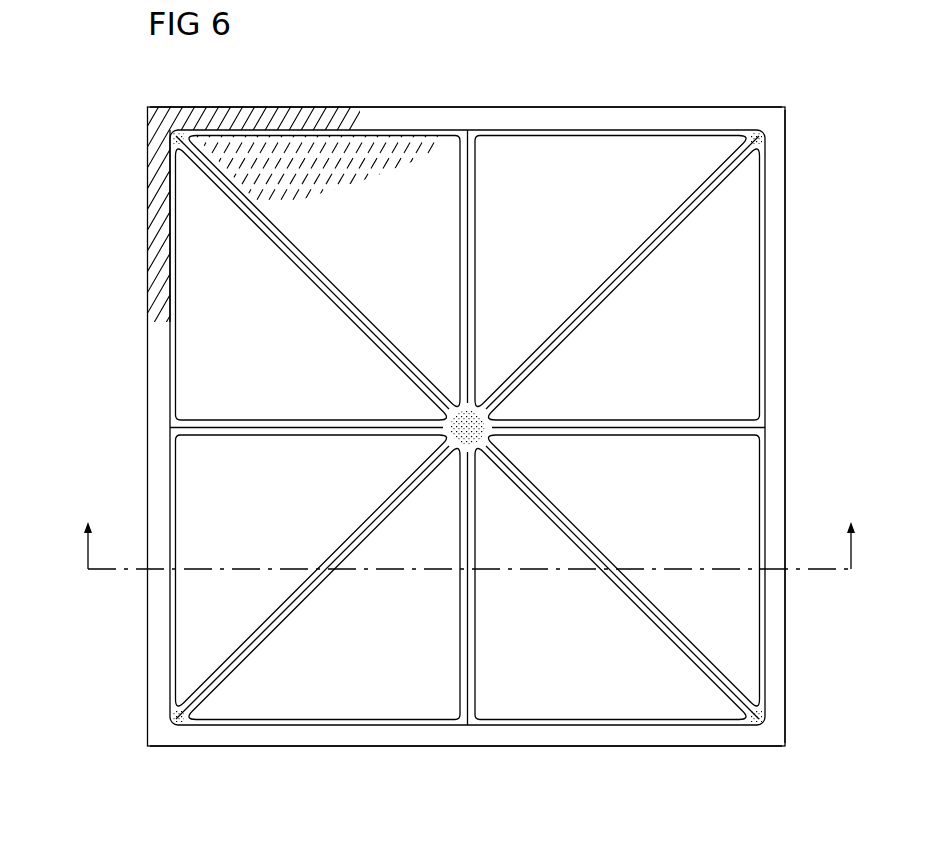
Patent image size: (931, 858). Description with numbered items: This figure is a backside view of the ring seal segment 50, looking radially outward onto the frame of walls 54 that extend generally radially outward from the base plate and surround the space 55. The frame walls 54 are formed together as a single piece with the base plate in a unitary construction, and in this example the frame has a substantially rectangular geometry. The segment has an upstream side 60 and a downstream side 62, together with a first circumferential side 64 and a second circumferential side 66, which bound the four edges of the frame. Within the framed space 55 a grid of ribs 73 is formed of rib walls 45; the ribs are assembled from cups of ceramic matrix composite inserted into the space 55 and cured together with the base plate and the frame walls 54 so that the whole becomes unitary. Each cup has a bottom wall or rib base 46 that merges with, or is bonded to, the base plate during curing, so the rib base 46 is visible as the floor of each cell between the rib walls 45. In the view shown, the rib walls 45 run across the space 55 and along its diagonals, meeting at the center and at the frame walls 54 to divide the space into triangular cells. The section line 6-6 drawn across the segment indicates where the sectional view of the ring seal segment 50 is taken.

The ring seal segment 50 is at (106, 159).
The frame walls 54 is at (160, 378).
The space 55 is at (200, 270).
The upstream side 60 is at (160, 336).
The downstream side 62 is at (786, 336).
The second circumferential side 66 is at (467, 106).
The first circumferential side 64 is at (467, 748).
The ribs 73 is at (492, 206).
The rib base 46 is at (388, 237).
The rib walls 45 is at (459, 262).
The section line 6- 6 is at (471, 528).